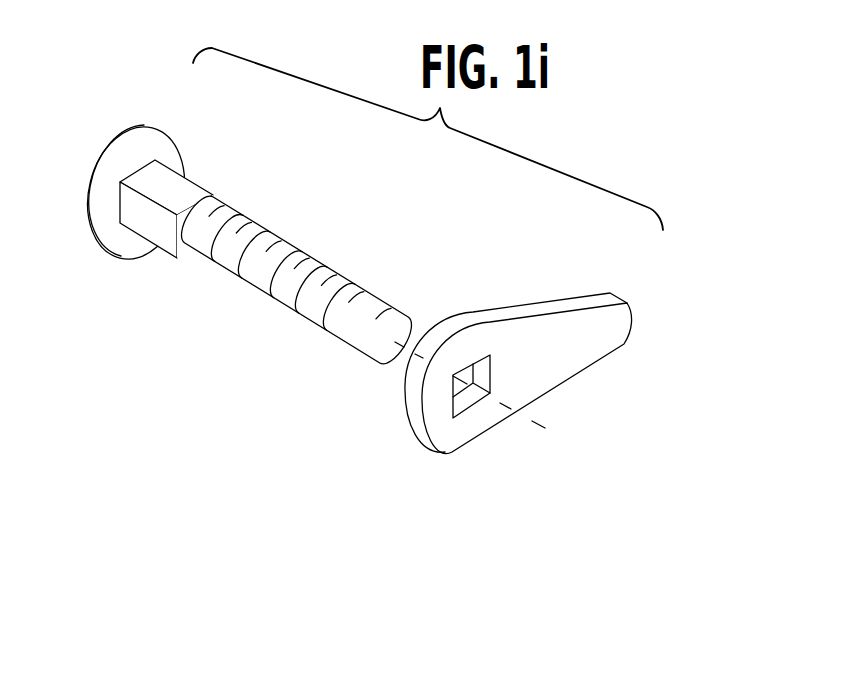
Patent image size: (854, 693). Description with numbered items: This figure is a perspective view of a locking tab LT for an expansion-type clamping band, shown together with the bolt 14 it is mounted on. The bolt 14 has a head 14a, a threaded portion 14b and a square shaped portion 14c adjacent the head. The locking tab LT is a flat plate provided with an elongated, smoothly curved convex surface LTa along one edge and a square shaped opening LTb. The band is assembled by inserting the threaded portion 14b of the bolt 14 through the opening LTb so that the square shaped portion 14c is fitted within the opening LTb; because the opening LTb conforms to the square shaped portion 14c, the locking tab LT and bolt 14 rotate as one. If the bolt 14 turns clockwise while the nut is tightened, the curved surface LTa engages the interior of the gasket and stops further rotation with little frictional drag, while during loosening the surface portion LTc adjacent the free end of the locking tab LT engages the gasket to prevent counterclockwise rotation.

The bolt 14 is at (231, 189).
The bolt head 14a is at (151, 129).
The threaded portion 14b is at (287, 250).
The square shaped portion 14c is at (185, 193).
The locking tab LT is at (527, 345).
The smoothly curved convex surface LTa is at (553, 391).
The square shaped opening LTb is at (453, 397).
The surface portion adjacent the free end LTc is at (627, 303).